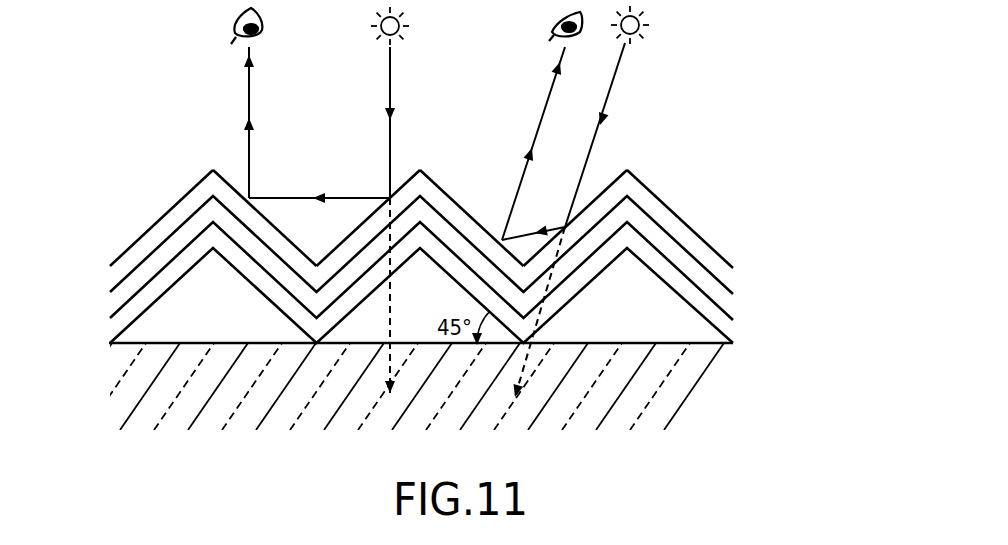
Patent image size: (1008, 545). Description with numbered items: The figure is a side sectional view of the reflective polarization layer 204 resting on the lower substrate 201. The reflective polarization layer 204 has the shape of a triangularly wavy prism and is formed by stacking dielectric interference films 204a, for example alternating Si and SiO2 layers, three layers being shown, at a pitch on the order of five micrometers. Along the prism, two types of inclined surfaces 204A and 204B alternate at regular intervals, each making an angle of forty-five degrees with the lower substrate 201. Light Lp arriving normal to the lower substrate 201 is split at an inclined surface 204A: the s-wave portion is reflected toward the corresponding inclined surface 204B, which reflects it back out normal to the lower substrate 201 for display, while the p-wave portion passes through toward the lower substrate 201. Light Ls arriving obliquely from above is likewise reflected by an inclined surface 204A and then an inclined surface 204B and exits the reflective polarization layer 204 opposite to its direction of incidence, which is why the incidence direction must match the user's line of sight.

The lower substrate 201 is at (714, 403).
The reflective polarization layer 204 is at (456, 214).
The inclined surface 204A is at (157, 220).
The inclined surface 204B is at (270, 220).
The dielectric interference film 204a is at (643, 227).
The light Lp is at (390, 70).
The light Ls is at (613, 87).